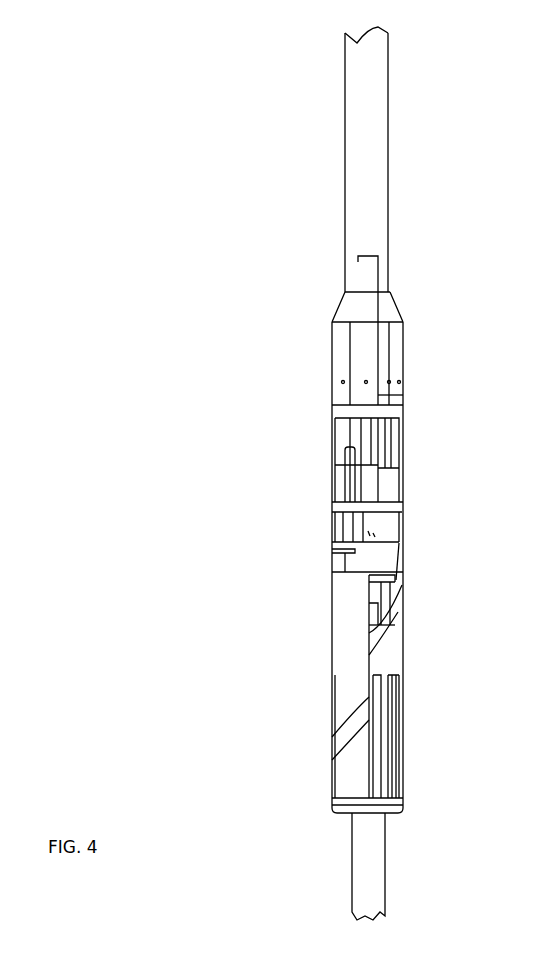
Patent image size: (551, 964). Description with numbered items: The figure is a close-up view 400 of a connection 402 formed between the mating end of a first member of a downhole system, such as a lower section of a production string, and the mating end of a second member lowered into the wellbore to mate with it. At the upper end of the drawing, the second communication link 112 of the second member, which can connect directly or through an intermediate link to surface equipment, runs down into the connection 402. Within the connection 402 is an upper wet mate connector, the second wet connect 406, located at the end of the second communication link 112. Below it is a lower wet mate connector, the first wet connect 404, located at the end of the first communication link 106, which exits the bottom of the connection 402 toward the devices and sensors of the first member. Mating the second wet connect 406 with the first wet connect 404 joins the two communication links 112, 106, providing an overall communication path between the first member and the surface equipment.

The close-up view 400 is at (124, 133).
The second communication link 112 is at (406, 73).
The connection 402 is at (416, 431).
The second wet connect 406 is at (404, 396).
The first wet connect 404 is at (396, 528).
The first communication link 106 is at (396, 848).